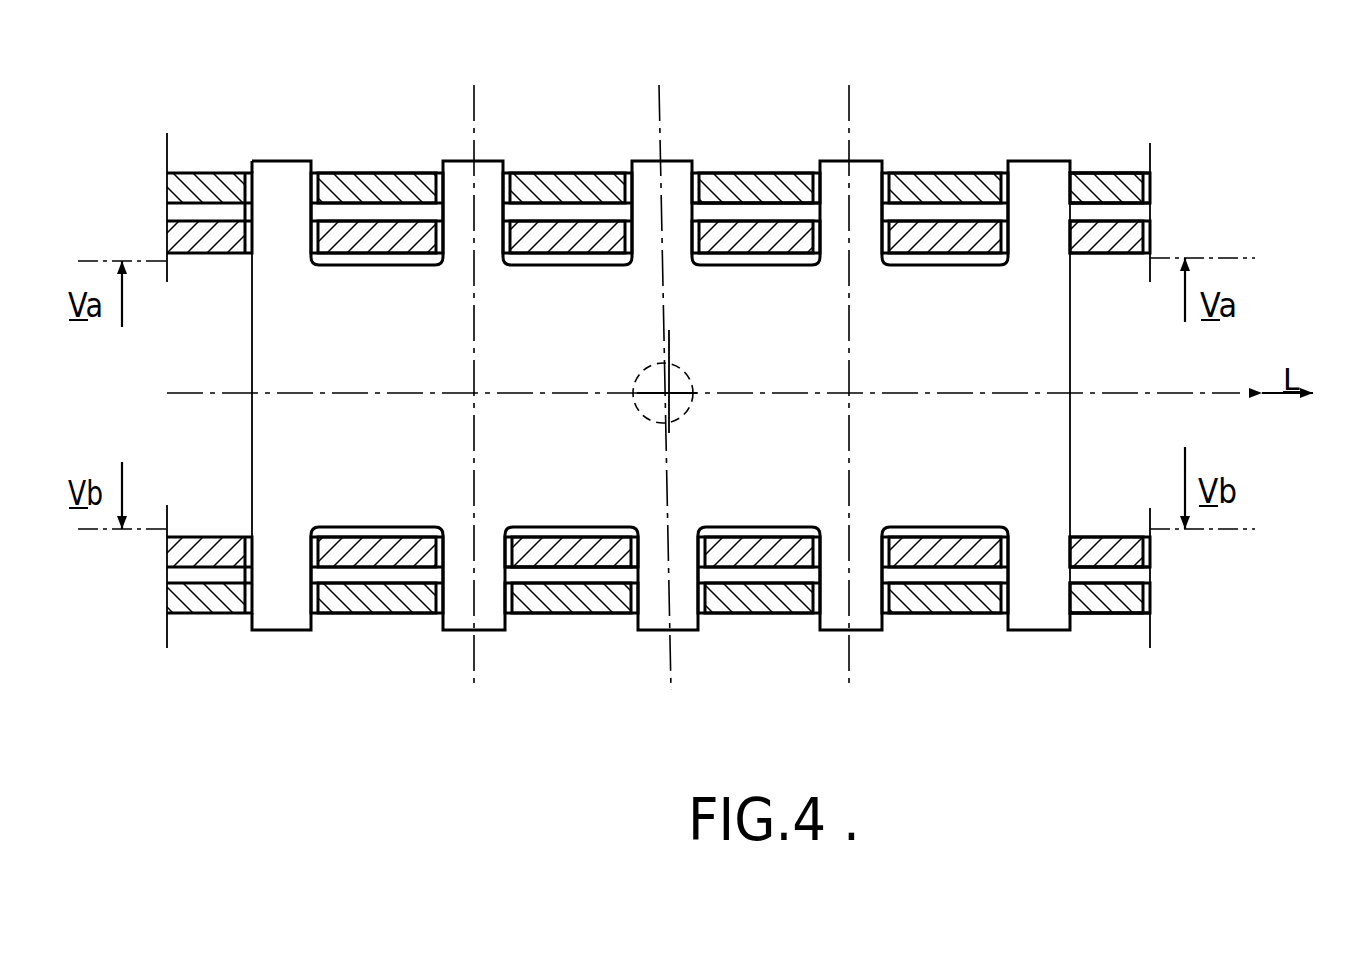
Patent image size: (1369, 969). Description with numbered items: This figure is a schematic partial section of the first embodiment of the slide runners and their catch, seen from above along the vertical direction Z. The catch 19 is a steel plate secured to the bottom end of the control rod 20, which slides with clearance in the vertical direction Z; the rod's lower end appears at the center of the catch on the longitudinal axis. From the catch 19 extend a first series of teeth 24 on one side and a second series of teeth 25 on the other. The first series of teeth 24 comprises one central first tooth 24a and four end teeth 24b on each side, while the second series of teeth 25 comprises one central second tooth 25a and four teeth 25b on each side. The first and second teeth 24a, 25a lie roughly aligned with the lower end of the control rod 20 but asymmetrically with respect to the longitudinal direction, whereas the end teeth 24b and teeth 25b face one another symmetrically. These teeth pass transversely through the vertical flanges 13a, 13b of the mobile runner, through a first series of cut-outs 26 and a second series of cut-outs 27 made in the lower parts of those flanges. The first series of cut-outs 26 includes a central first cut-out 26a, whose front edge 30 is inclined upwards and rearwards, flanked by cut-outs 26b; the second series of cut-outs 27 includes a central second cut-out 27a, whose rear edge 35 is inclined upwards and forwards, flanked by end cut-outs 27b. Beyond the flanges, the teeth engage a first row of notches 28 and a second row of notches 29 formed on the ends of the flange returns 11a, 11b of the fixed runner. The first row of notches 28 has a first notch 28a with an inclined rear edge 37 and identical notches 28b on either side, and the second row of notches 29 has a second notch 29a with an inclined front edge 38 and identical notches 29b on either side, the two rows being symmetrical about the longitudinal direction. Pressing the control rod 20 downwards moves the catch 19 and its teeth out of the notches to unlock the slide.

The flange return 11a is at (1102, 592).
The flange return 11b is at (1100, 185).
The vertical flange 13a is at (1115, 548).
The vertical flange 13b is at (1112, 225).
The catch 19 is at (1072, 357).
The control rod 20 is at (687, 408).
The vertical direction Z is at (665, 395).
The first series of teeth 24 is at (290, 498).
The first tooth 24a is at (680, 612).
The end teeth 24b is at (283, 600).
The second series of teeth 25 is at (297, 347).
The second tooth 25a is at (652, 170).
The teeth 25b is at (278, 180).
The first series of cut-outs 26 is at (1153, 550).
The first cut-out 26a is at (658, 535).
The cut-outs 26b is at (245, 533).
The second series of cut-outs 27 is at (1153, 232).
The second cut-out 27a is at (677, 250).
The end cut-outs 27b is at (243, 263).
The first row of notches 28 is at (1153, 600).
The first notch 28a is at (632, 615).
The notches 28b is at (433, 615).
The second row of notches 29 is at (1153, 182).
The second notch 29a is at (694, 176).
The notches 29b is at (317, 175).
The front edge 30 is at (633, 550).
The rear edge 35 is at (715, 252).
The rear edge 37 is at (727, 612).
The front edge 38 is at (630, 193).